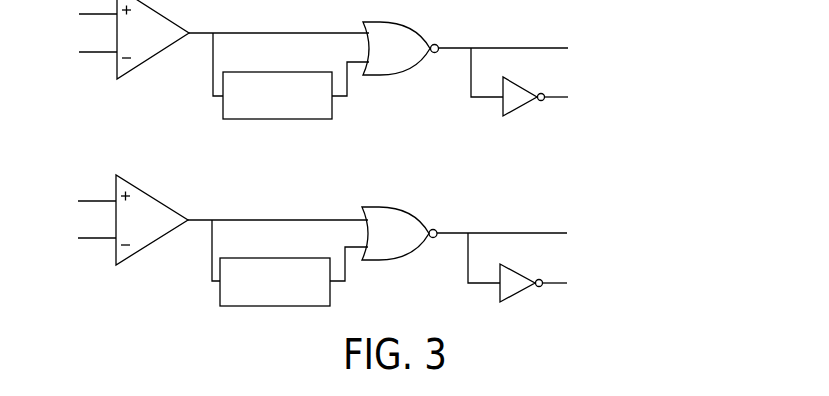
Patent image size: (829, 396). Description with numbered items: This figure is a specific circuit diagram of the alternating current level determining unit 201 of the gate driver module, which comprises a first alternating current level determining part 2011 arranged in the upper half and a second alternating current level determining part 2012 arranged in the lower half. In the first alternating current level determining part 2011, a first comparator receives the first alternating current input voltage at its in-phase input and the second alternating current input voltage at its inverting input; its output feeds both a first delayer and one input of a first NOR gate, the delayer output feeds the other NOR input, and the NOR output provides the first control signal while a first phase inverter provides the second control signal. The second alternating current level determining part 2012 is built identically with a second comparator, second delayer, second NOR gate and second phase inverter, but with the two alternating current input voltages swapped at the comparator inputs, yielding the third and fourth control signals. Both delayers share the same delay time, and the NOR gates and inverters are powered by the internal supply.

The alternating current level determining unit 201 is at (398, 153).
The first alternating current level determining part 2011 is at (373, 59).
The second alternating current level determining part 2012 is at (373, 240).